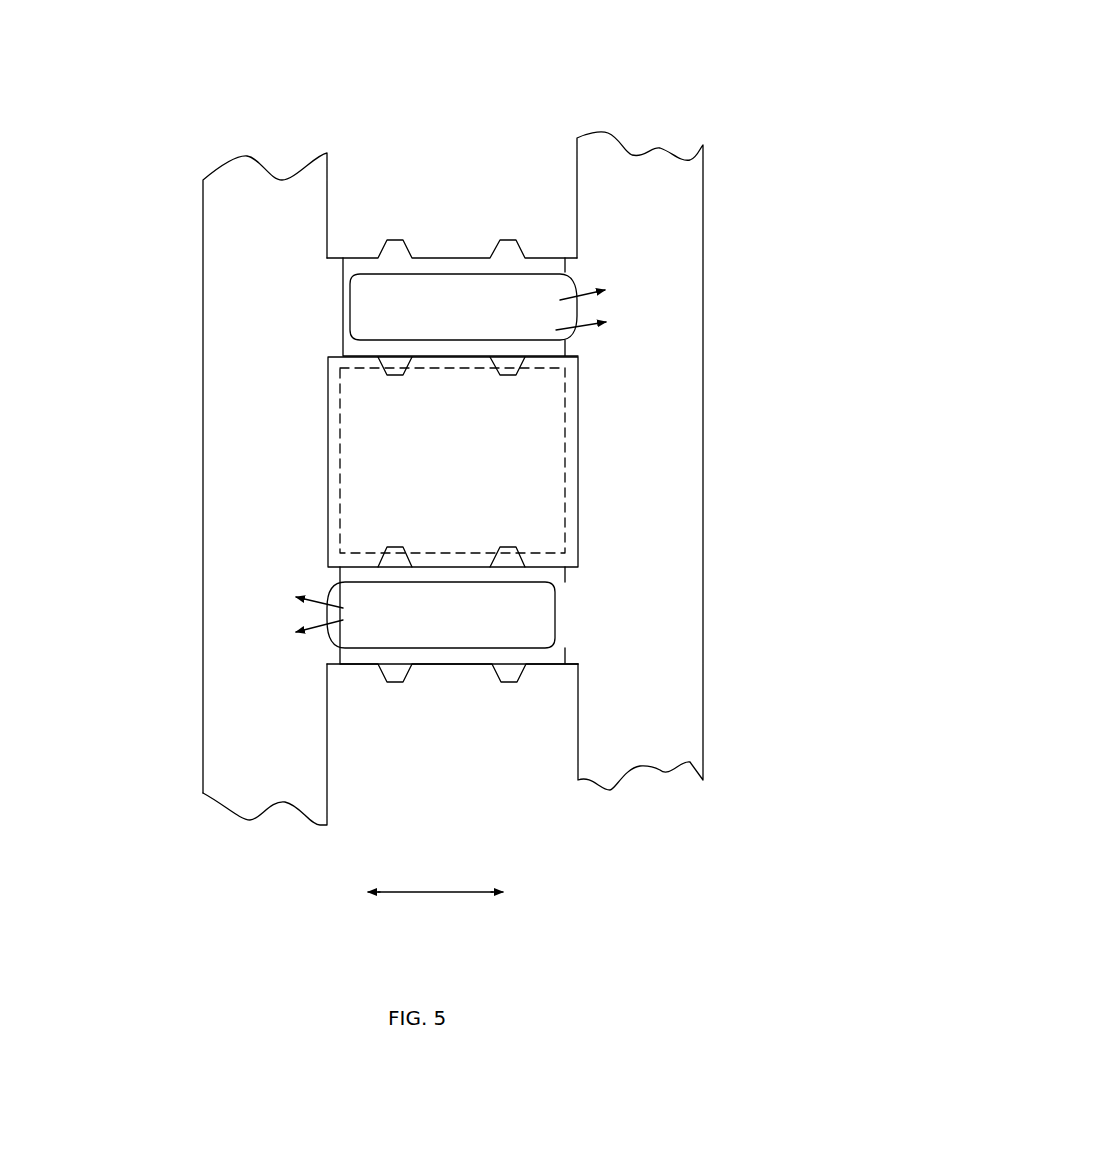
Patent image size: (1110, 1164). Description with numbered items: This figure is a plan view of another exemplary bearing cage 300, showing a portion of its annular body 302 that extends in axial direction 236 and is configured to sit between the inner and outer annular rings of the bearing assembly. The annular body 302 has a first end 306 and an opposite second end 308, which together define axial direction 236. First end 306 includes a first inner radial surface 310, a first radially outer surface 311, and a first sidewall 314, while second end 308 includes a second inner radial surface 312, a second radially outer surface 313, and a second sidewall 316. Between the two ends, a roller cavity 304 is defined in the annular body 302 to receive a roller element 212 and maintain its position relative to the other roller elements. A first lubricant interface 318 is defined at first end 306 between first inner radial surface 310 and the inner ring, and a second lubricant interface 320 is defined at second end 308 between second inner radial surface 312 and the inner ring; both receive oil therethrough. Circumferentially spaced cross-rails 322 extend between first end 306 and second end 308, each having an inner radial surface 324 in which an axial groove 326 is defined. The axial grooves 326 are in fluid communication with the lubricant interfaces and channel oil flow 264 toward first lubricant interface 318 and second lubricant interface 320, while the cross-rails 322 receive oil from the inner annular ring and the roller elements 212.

The bearing cage 300 is at (697, 57).
The annular body 302 is at (672, 350).
The roller cavity 304 is at (532, 409).
The first end 306 is at (266, 160).
The second end 308 is at (658, 140).
The first inner radial surface 310 is at (227, 492).
The first radially outer surface 311 is at (188, 390).
The second inner radial surface 312 is at (680, 483).
The second radially outer surface 313 is at (710, 405).
The first sidewall 314 is at (200, 268).
The second sidewall 316 is at (703, 215).
The first lubricant interface 318 is at (256, 792).
The second lubricant interface 320 is at (653, 750).
The cross-rail 322 is at (355, 255).
The cross-rail inner radial surface 324 is at (437, 352).
The axial groove 326 is at (585, 290).
The oil flow 264 is at (592, 314).
The roller element 212 is at (565, 460).
The axial direction 236 is at (437, 890).